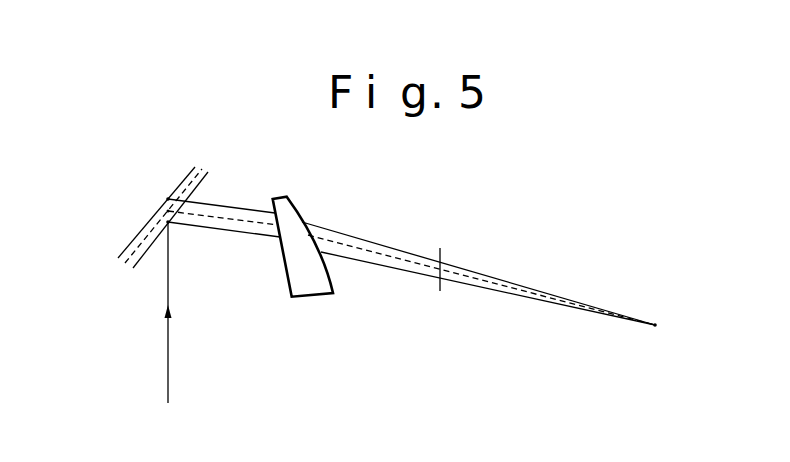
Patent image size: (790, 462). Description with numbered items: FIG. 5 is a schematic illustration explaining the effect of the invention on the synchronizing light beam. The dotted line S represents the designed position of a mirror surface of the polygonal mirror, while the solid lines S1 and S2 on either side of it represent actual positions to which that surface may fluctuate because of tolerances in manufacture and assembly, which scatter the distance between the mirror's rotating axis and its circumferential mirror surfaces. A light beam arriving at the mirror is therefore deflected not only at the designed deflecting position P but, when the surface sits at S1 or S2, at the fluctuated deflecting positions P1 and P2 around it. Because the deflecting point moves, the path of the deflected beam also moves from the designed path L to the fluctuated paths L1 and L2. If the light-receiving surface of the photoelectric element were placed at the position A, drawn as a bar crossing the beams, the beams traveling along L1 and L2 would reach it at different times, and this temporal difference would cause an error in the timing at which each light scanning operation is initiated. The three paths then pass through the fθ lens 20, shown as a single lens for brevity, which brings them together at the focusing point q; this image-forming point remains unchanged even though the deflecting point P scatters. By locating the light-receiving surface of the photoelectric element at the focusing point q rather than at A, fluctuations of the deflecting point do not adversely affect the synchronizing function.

The fluctuated mirror surface position S2 is at (118, 258).
The designed mirror surface position S is at (128, 265).
The fluctuated mirror surface position S1 is at (153, 246).
The fluctuated deflecting position P2 is at (168, 199).
The designed deflecting position P is at (172, 224).
The fluctuated deflecting position P1 is at (170, 228).
The fluctuated optical path L2 is at (373, 244).
The designed optical path L is at (384, 252).
The fluctuated optical path L1 is at (352, 259).
The fθ lens 20 is at (293, 247).
The light-receiving surface position A is at (438, 293).
The focusing point q is at (655, 328).